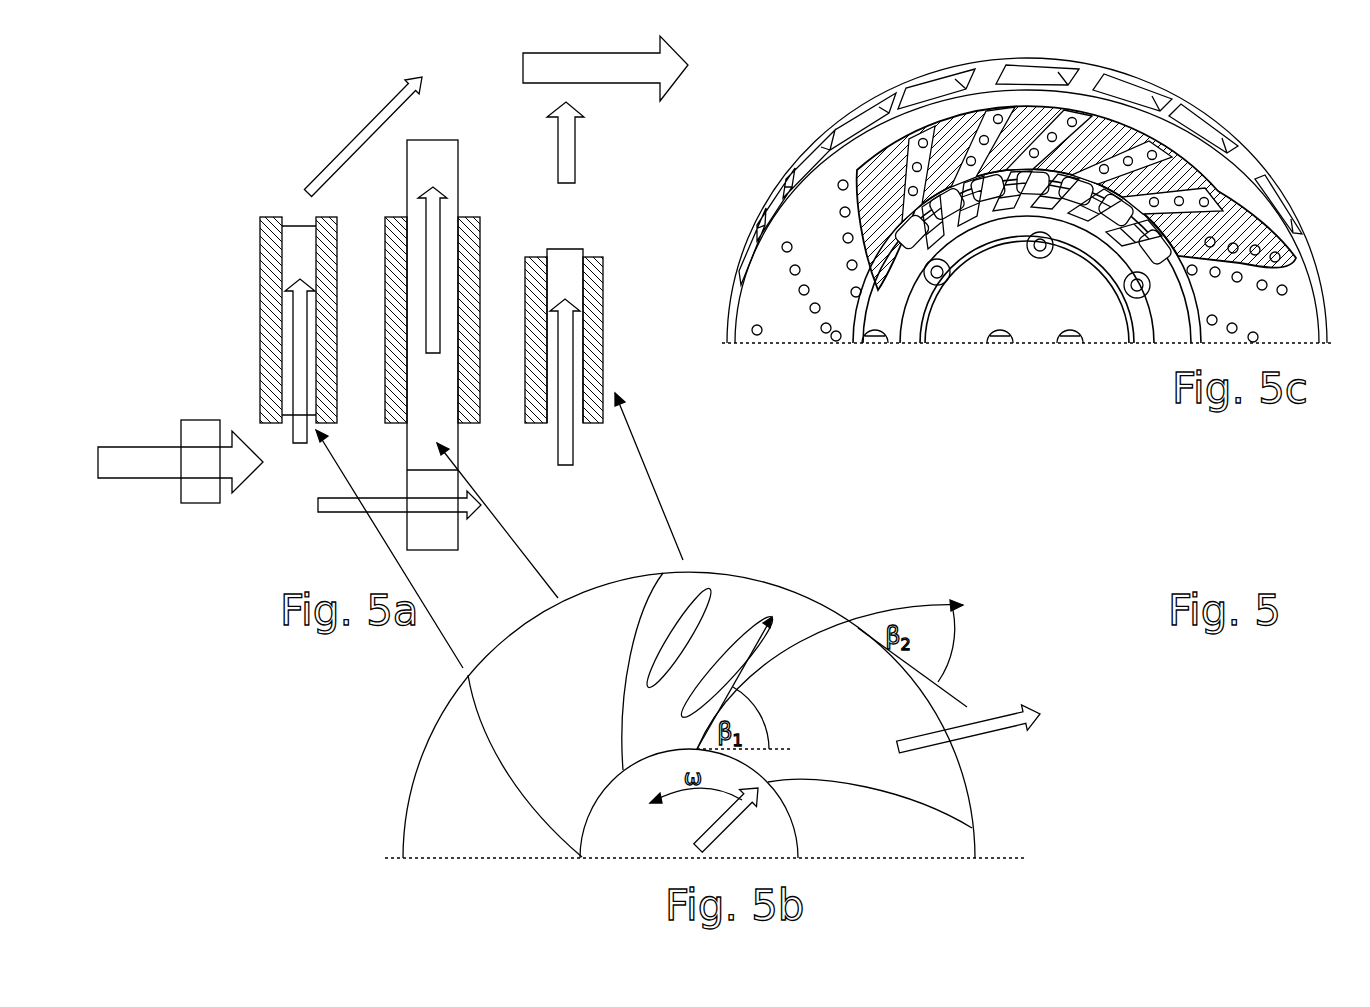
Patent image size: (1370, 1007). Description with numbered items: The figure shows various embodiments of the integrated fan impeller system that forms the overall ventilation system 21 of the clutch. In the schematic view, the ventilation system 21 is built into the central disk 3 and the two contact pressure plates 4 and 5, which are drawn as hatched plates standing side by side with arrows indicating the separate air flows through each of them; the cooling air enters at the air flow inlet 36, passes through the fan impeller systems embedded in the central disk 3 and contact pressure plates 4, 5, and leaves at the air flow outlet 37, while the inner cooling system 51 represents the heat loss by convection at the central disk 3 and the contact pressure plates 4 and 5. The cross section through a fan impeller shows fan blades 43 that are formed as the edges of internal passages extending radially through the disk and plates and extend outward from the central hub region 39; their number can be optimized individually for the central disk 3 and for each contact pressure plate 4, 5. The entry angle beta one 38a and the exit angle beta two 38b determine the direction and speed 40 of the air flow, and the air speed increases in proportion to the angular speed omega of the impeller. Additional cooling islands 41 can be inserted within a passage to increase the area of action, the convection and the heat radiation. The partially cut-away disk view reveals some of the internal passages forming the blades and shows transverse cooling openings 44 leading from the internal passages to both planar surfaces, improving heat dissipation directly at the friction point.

In FIG. 5a, the central disk 3 is at (408, 402).
In FIG. 5a, the contact pressure plate 4 is at (297, 228).
In FIG. 5a, the contact pressure plate 5 is at (563, 253).
In FIG. 5a, the ventilation system 21 is at (306, 476).
In FIG. 5a, the air flow inlet 36 is at (107, 440).
In FIG. 5a, the air flow outlet 37 is at (688, 65).
In FIG. 5a, the inner cooling system 51 is at (327, 165).
In FIG. 5b, the entry angle beta 1 38a is at (766, 720).
In FIG. 5b, the exit angle beta 2 38b is at (953, 637).
In FIG. 5b, the hub 39 is at (660, 825).
In FIG. 5b, the speed of the air flow 40 is at (700, 833).
In FIG. 5b, the cooling islands 41 is at (828, 537).
In FIG. 5b, the fan blades 43 is at (495, 750).
In FIG. 5c, the transverse cooling openings 44 is at (973, 155).